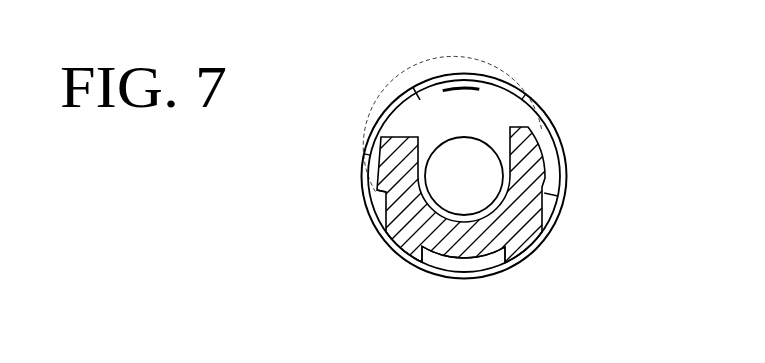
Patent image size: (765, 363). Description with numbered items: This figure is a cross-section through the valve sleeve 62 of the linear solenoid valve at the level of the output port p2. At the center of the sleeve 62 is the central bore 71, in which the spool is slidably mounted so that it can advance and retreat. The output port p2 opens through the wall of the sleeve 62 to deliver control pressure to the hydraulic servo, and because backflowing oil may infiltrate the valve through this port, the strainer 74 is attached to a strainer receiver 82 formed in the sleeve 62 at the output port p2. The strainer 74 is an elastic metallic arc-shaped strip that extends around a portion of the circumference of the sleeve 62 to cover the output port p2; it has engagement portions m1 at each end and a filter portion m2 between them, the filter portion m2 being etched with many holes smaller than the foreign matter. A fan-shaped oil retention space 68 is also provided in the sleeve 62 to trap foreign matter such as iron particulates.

The sleeve 62 is at (533, 258).
The strainer 74 is at (527, 93).
The output port p2 is at (478, 103).
The filter portion m2 is at (422, 88).
The strainer receiver 82 is at (461, 195).
The central bore 71 is at (538, 164).
The oil retention space 68 is at (468, 270).
The engagement portion m1 is at (372, 196).